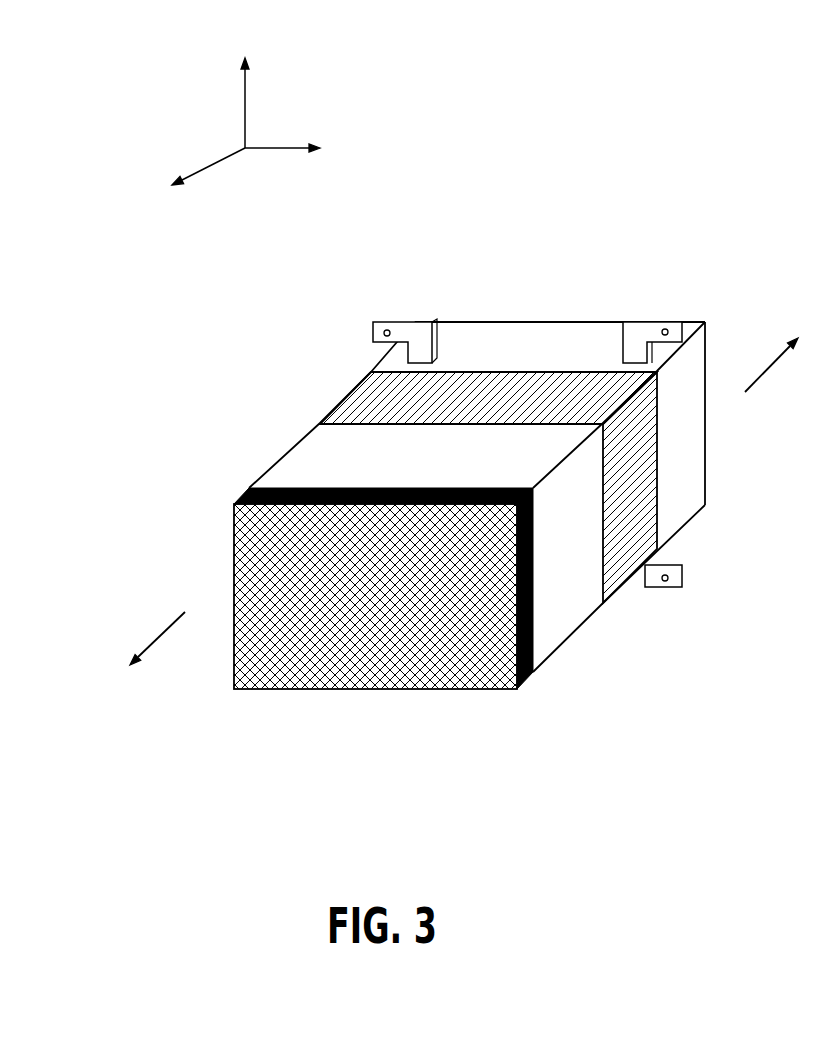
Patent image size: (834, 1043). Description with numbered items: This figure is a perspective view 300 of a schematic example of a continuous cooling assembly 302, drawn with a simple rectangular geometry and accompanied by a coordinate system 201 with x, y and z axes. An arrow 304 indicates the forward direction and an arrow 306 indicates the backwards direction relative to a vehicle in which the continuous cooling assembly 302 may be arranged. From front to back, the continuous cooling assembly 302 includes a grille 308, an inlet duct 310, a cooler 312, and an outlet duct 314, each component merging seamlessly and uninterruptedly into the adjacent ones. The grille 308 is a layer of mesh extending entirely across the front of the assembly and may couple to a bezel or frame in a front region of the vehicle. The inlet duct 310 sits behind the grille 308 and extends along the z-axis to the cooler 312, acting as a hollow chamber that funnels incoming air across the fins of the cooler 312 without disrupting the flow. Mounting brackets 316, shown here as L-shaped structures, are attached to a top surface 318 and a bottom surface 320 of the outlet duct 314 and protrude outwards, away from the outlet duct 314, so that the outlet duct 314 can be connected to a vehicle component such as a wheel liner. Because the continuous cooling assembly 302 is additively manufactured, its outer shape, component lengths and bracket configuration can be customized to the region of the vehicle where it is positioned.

The coordinate system 201 is at (180, 86).
The perspective view 300 is at (550, 129).
The continuous cooling assembly 302 is at (491, 452).
The arrow 304 is at (162, 630).
The arrow 306 is at (778, 362).
The grille 308 is at (245, 487).
The inlet duct 310 is at (308, 455).
The cooler 312 is at (368, 398).
The outlet duct 314 is at (587, 310).
The mounting brackets 316 is at (436, 334).
The top surface 318 is at (505, 340).
The bottom surface 320 is at (680, 523).